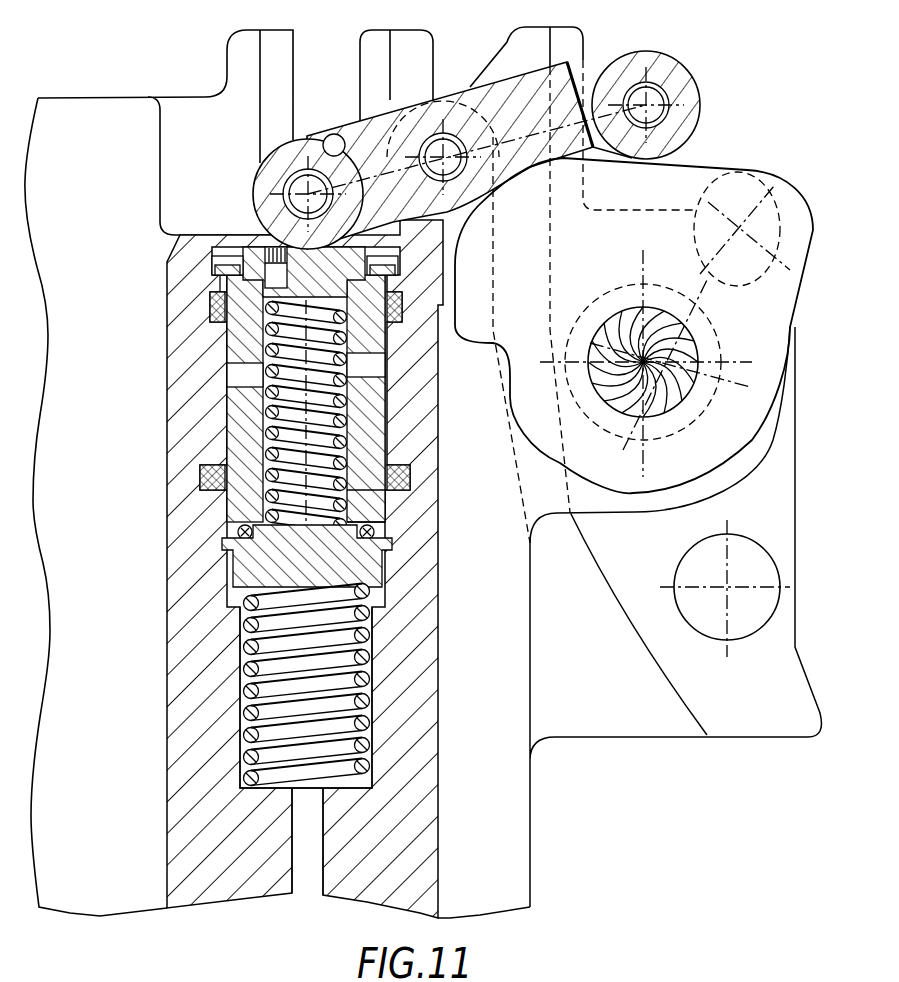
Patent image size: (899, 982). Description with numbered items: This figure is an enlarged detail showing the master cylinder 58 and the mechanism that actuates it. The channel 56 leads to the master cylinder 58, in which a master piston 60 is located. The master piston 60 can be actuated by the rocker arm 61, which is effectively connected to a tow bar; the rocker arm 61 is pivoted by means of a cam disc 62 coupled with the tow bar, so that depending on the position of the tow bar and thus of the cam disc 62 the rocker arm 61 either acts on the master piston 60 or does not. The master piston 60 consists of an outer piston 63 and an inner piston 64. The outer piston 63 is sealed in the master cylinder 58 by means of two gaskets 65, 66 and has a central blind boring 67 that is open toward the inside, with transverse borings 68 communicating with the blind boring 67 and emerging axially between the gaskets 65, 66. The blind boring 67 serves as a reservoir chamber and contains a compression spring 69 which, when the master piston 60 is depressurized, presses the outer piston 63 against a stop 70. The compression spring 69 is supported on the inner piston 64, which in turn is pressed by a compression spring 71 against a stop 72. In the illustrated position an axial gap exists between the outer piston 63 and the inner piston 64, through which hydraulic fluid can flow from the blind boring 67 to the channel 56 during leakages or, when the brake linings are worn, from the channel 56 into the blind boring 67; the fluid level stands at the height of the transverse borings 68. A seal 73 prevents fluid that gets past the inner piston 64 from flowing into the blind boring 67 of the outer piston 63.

The channel 56 is at (303, 887).
The master cylinder 58 is at (233, 417).
The master piston 60 is at (462, 682).
The rocker arm 61 is at (472, 93).
The cam disc 62 is at (688, 174).
The outer piston 63 is at (240, 330).
The inner piston 64 is at (233, 563).
The gasket 65 is at (214, 290).
The gasket 66 is at (200, 472).
The blind boring 67 is at (352, 498).
The transverse borings 68 is at (367, 377).
The compression spring 69 is at (343, 420).
The stop 70 is at (230, 258).
The compression spring 71 is at (373, 740).
The stop 72 is at (387, 550).
The seal 73 is at (240, 528).